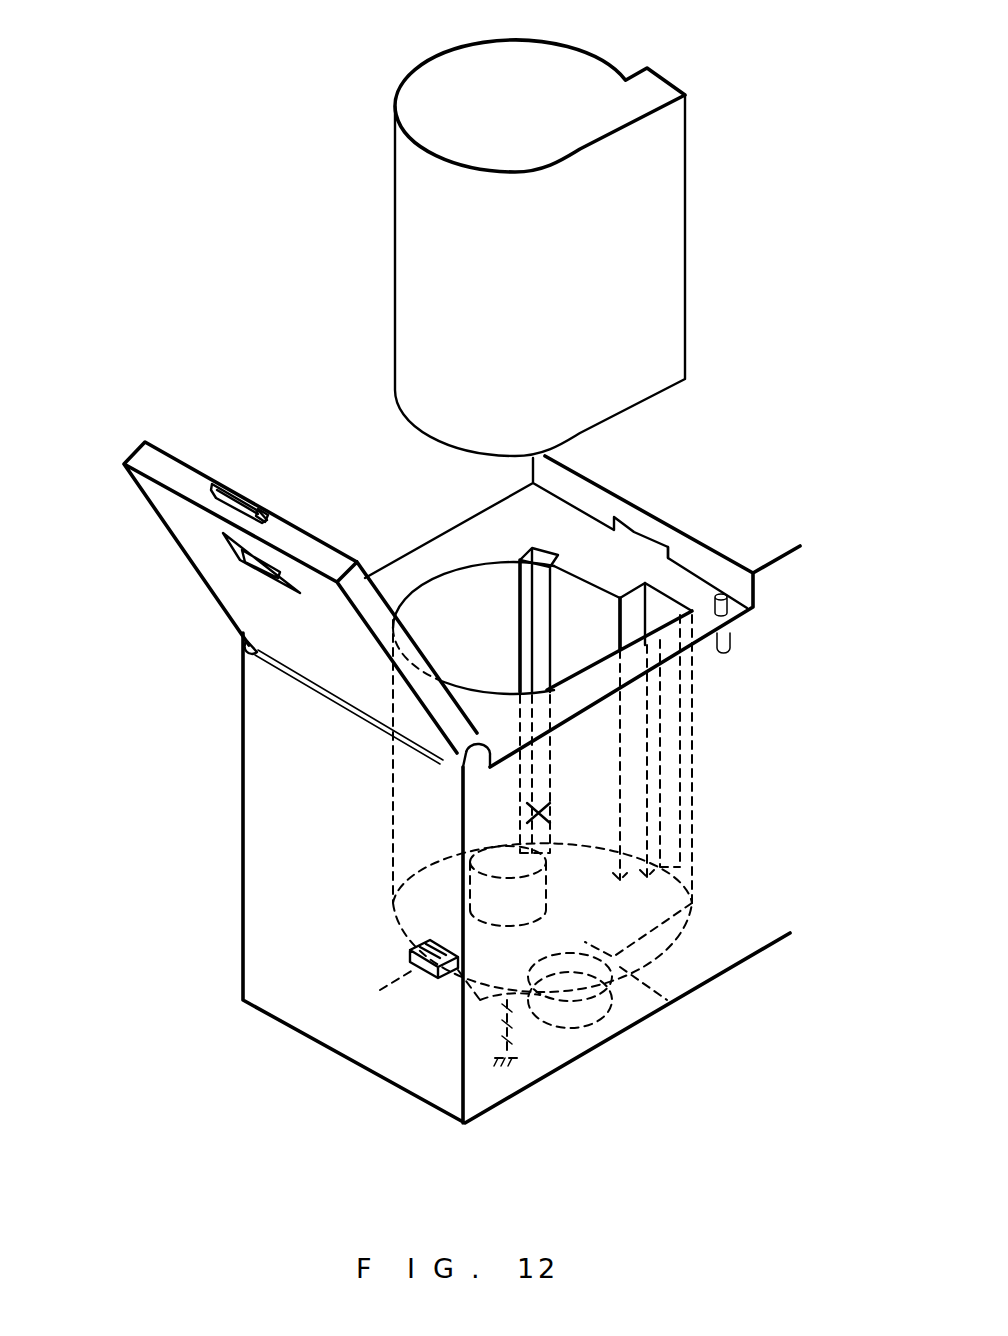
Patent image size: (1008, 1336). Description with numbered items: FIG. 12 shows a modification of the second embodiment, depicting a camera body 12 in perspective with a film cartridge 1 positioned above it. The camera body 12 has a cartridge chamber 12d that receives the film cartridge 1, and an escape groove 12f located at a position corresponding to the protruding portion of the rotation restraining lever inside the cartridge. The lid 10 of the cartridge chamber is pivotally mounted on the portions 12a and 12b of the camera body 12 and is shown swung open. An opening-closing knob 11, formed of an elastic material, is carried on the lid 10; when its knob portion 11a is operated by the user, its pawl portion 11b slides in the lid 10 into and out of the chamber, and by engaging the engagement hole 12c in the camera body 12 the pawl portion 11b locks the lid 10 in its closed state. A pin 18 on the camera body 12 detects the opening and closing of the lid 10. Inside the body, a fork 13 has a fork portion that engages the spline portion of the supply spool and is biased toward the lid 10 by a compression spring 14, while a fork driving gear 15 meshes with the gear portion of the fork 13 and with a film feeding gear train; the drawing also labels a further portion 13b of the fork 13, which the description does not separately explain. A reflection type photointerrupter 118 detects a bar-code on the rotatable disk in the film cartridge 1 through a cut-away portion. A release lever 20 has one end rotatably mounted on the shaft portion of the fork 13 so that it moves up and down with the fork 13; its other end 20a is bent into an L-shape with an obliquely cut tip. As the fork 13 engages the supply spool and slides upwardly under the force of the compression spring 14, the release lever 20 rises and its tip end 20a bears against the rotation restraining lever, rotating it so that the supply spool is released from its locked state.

The film cartridge 1 is at (579, 52).
The lid of the cartridge chamber 10 is at (298, 530).
The opening-closing knob 11 is at (232, 478).
The knob portion 11a is at (232, 553).
The pawl portion 11b is at (252, 505).
The camera body 12 is at (587, 527).
The portion of the camera body 12a is at (460, 770).
The portion of the camera body 12b is at (245, 648).
The engagement hole 12c is at (648, 545).
The cartridge chamber 12d is at (447, 597).
The escape groove 12f is at (543, 552).
The fork 13 is at (470, 867).
The bottom plate 13b is at (600, 962).
The compression spring 14 is at (507, 1015).
The fork driving gear 15 is at (593, 1013).
The pin 18 is at (732, 641).
The release lever 20 is at (657, 940).
The tip end of the release lever 20a is at (545, 815).
The reflection type photointerrupter 118 is at (412, 968).